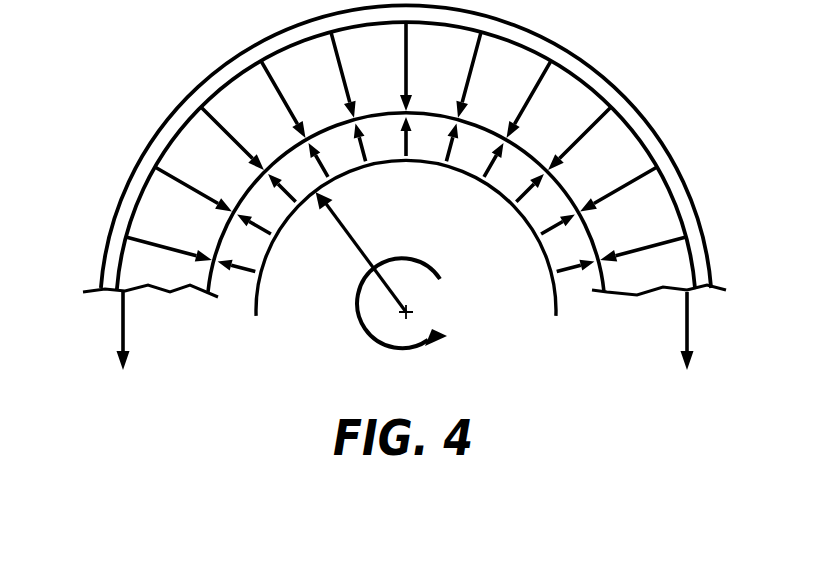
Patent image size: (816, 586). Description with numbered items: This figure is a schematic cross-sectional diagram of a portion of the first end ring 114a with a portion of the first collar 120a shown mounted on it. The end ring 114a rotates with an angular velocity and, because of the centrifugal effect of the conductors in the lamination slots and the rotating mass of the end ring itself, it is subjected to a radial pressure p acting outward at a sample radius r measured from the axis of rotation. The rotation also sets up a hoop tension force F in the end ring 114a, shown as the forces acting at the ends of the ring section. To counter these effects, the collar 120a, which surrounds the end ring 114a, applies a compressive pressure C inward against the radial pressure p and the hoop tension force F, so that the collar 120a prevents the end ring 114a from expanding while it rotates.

The first collar 120a is at (197, 92).
The first end ring 114a is at (153, 150).
The hoop tension force F is at (403, 345).
The compressive pressure C is at (406, 142).
The radial pressure p is at (406, 194).
The sample radius r is at (406, 237).